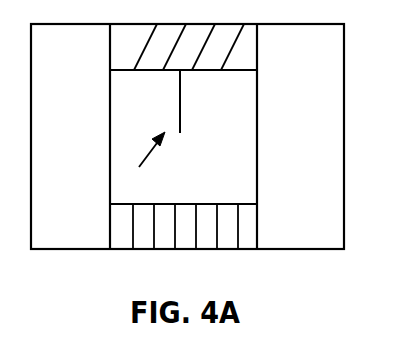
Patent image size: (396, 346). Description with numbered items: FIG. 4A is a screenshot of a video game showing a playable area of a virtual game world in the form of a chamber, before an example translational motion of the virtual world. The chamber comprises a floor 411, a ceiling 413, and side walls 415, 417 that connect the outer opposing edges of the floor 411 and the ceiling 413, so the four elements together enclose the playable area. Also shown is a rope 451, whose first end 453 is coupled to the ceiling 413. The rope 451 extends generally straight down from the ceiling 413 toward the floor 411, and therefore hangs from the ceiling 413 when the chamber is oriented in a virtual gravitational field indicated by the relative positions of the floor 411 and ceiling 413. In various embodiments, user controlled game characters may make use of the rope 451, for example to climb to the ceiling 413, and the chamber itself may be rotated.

The floor 411 is at (183, 203).
The ceiling 413 is at (209, 71).
The side wall 415 is at (110, 147).
The side wall 417 is at (259, 135).
The rope 451 is at (143, 164).
The first end of the rope 453 is at (178, 71).